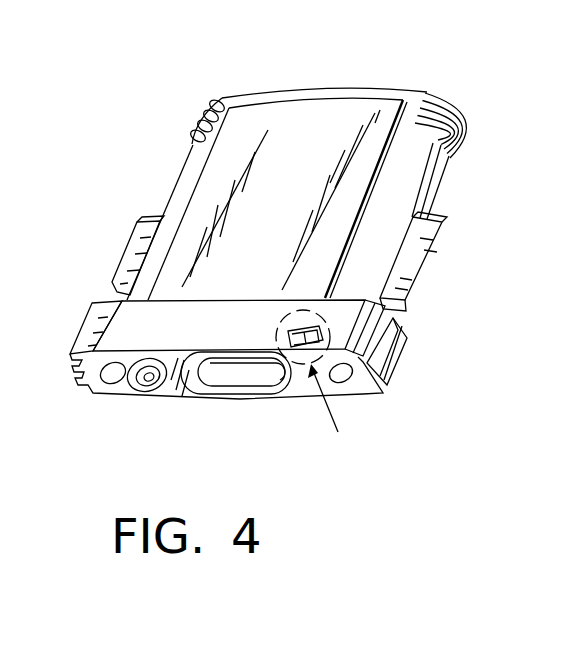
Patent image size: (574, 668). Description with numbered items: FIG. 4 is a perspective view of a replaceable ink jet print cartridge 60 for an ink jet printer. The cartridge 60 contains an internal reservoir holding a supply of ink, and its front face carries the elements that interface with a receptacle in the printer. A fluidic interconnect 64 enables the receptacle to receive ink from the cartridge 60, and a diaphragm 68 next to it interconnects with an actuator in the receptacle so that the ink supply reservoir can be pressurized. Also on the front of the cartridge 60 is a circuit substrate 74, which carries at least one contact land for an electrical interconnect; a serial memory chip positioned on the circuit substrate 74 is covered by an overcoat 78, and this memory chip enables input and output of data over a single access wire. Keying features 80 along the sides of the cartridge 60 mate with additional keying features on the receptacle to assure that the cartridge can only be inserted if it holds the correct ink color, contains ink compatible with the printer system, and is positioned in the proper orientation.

The ink jet print cartridge 60 is at (287, 80).
The fluidic interconnect 64 is at (141, 389).
The diaphragm 68 is at (237, 378).
The circuit substrate 74 is at (288, 333).
The overcoat 78 is at (324, 330).
The keying features 80 is at (92, 323).